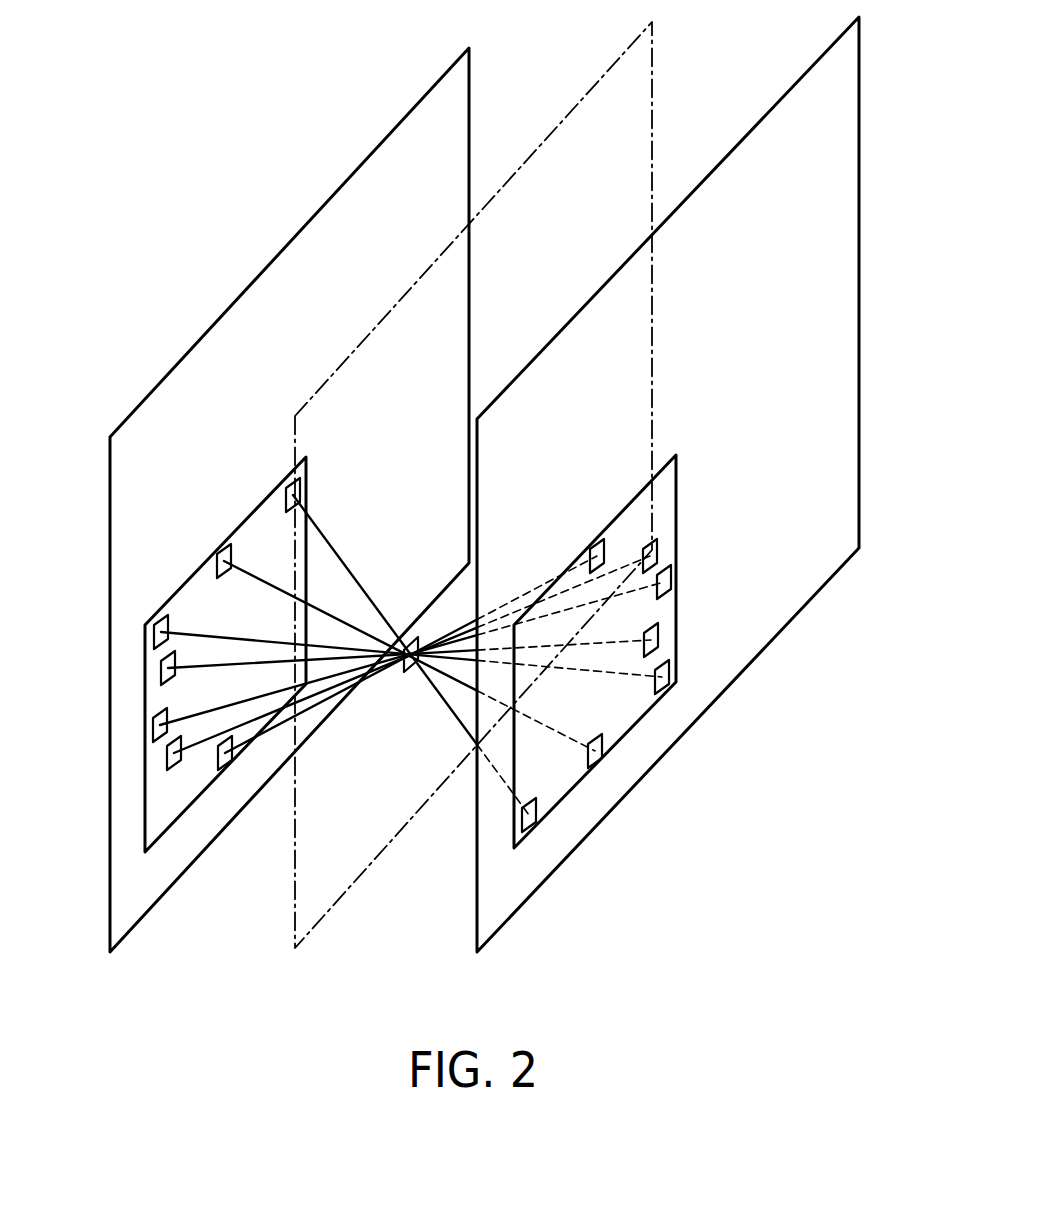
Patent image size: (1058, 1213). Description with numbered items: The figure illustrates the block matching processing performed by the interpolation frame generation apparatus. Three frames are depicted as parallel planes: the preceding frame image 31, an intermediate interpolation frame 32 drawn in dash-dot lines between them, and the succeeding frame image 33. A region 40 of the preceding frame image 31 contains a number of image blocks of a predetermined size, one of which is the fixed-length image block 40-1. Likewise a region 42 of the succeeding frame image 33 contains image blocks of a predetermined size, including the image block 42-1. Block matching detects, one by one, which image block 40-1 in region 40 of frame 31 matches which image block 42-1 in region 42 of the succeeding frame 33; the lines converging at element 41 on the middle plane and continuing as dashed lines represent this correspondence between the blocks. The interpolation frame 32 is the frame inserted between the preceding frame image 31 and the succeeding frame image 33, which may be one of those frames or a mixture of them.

The preceding frame image 31 is at (108, 873).
The interpolation frame 32 is at (293, 873).
The succeeding frame image 33 is at (475, 873).
The region 40 is at (176, 594).
The image block 40-1 is at (227, 546).
The pinhole 41 is at (413, 637).
The region 42 is at (677, 512).
The image block 42-1 is at (604, 760).